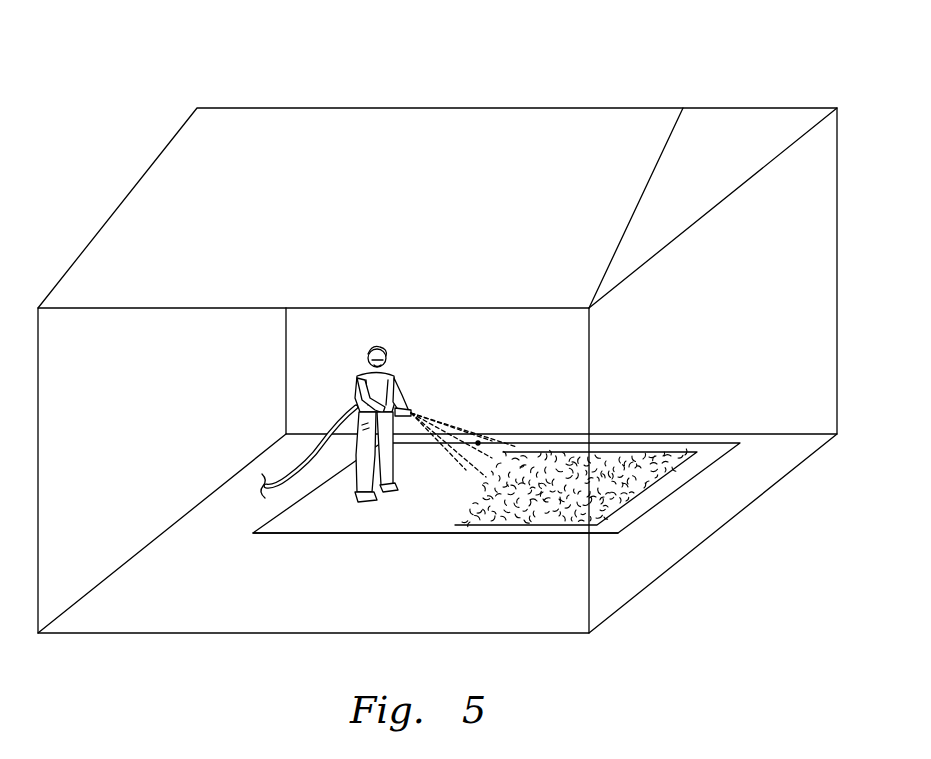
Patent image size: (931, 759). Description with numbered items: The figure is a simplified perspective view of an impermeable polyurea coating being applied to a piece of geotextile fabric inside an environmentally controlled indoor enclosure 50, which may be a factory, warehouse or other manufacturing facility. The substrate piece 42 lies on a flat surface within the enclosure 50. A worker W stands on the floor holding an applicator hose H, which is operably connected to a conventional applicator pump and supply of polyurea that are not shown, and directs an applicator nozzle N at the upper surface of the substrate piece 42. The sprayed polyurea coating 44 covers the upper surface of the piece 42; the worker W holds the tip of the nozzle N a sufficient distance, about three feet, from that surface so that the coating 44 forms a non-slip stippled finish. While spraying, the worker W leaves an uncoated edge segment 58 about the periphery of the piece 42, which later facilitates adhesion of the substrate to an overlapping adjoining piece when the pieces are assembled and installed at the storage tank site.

The environmentally controlled indoor enclosure 50 is at (760, 109).
The substrate piece 42 is at (670, 496).
The polyurea coating 44 is at (632, 467).
The uncoated edge segment 58 is at (540, 532).
The applicator hose H is at (295, 463).
The worker W is at (357, 377).
The applicator nozzle N is at (410, 411).